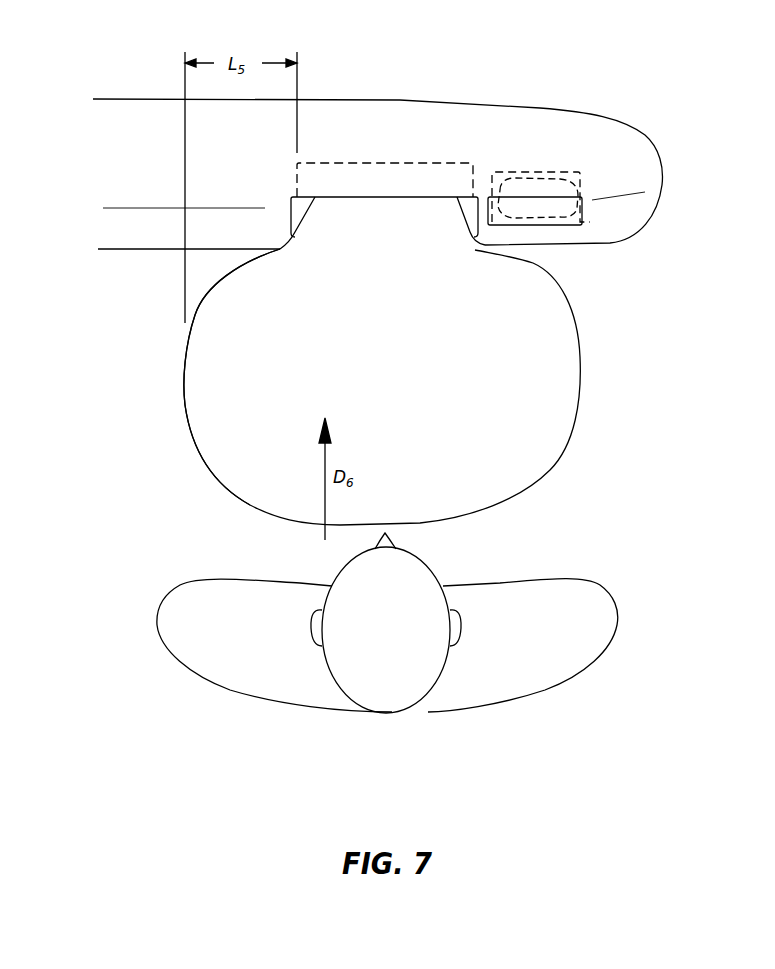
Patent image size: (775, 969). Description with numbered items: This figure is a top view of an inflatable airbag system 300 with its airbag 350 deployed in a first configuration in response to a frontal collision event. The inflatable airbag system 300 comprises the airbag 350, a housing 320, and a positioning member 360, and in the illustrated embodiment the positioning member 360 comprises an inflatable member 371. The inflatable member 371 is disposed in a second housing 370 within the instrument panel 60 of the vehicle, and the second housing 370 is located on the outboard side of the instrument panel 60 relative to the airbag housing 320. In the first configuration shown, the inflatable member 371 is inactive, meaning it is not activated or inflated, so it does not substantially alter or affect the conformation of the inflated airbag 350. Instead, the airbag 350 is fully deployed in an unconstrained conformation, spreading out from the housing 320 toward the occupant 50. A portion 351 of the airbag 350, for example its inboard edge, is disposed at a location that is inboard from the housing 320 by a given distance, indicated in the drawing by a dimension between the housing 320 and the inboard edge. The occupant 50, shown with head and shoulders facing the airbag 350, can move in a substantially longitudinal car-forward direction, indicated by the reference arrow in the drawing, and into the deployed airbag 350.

The occupant 50 is at (548, 632).
The instrument panel 60 is at (152, 158).
The inflatable airbag system 300 is at (358, 134).
The housing 320 is at (397, 160).
The airbag 350 is at (238, 442).
The portion 351 is at (183, 385).
The positioning member 360 is at (580, 222).
The second housing 370 is at (555, 172).
The inflatable member 371 is at (545, 205).